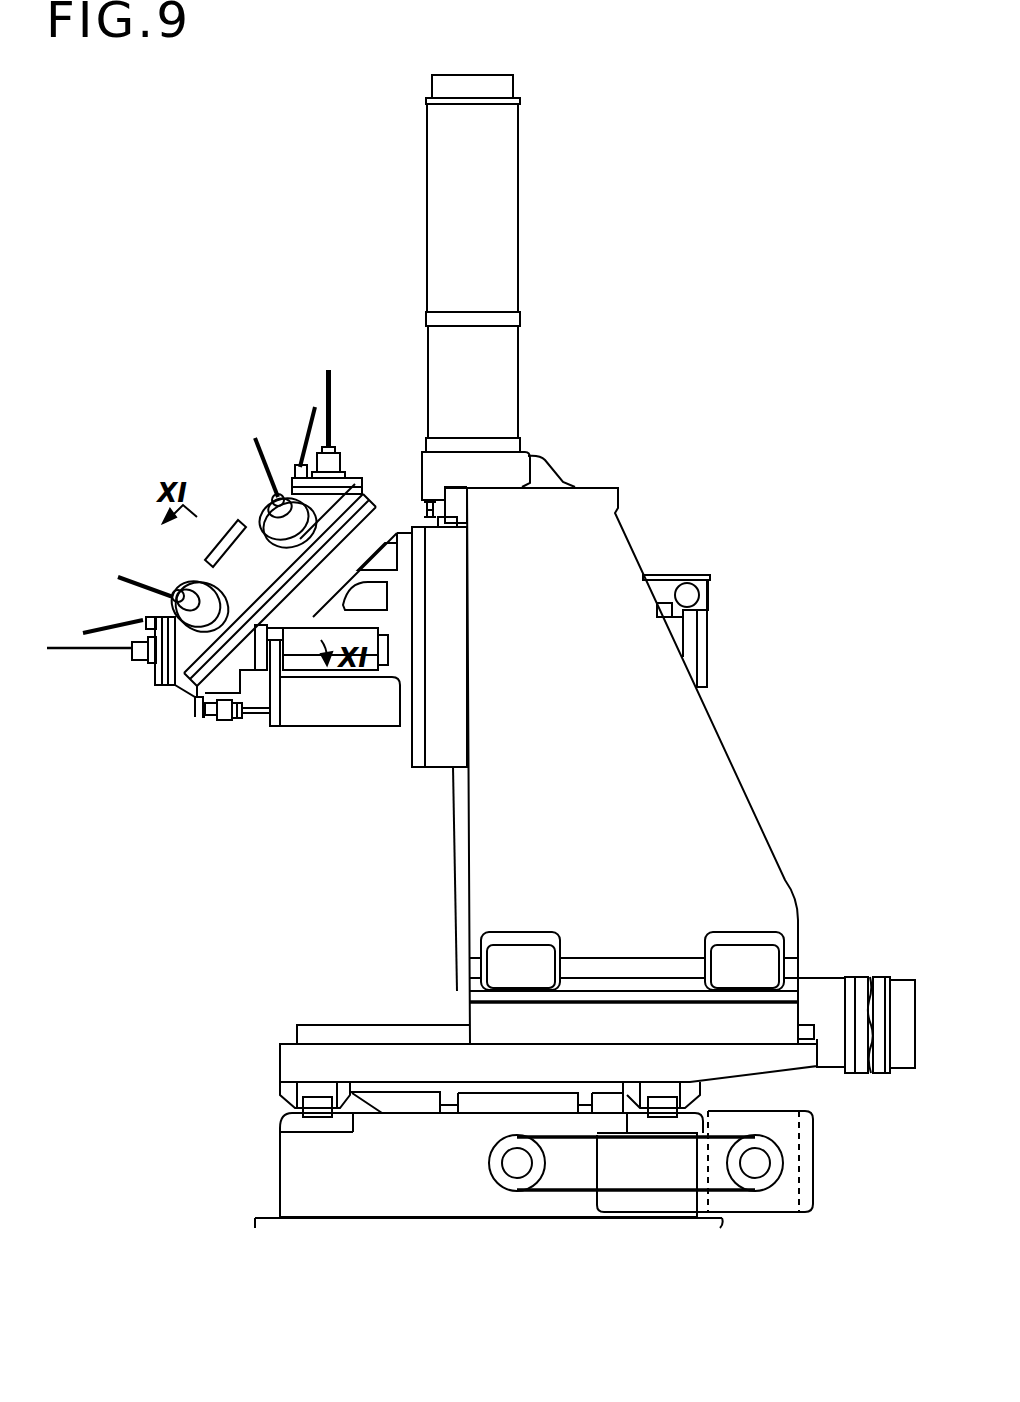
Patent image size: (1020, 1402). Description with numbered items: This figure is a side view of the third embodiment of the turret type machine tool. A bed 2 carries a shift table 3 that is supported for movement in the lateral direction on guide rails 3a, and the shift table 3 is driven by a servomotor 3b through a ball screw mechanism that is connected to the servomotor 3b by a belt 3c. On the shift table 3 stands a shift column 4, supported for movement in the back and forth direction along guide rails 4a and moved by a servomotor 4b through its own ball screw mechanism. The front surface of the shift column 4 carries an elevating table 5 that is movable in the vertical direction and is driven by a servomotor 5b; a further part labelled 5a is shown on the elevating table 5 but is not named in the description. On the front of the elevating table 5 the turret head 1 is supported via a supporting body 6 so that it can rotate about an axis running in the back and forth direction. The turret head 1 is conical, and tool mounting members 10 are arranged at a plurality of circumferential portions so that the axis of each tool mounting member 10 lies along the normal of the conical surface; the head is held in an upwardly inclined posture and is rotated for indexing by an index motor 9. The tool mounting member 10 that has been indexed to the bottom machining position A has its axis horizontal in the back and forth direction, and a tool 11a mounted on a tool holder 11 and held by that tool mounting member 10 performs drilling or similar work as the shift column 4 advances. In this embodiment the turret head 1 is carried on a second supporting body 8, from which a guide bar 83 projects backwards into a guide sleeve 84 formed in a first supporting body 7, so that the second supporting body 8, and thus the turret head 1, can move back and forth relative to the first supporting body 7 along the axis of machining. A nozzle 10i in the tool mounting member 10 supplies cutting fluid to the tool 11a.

The turret head 1 is at (253, 540).
The bed 2 is at (288, 1167).
The shift table 3 is at (280, 1058).
The guide rails 3a is at (295, 1100).
The servomotor 3b is at (813, 1159).
The belt 3c is at (566, 1192).
The shift column 4 is at (735, 790).
The guide rails 4a is at (368, 1024).
The servomotor 4b is at (863, 978).
The elevating table 5 is at (443, 743).
The slide rail 5a is at (454, 878).
The servomotor 5b is at (498, 190).
The supporting body 6 is at (252, 725).
The first supporting body 7 is at (393, 717).
The second supporting body 8 is at (195, 695).
The index motor 9 is at (357, 543).
The tool mounting member 10 is at (352, 478).
The nozzle 10i is at (303, 455).
The tool holder 11 is at (332, 465).
The tool 11a is at (331, 378).
The guide bar 83 is at (275, 728).
The guide sleeve 84 is at (310, 663).
The machining position A is at (145, 610).